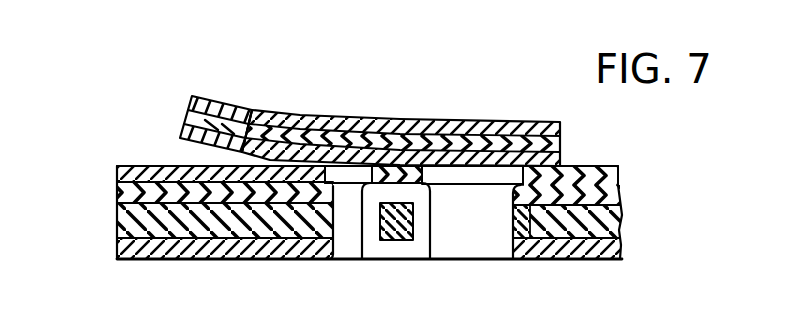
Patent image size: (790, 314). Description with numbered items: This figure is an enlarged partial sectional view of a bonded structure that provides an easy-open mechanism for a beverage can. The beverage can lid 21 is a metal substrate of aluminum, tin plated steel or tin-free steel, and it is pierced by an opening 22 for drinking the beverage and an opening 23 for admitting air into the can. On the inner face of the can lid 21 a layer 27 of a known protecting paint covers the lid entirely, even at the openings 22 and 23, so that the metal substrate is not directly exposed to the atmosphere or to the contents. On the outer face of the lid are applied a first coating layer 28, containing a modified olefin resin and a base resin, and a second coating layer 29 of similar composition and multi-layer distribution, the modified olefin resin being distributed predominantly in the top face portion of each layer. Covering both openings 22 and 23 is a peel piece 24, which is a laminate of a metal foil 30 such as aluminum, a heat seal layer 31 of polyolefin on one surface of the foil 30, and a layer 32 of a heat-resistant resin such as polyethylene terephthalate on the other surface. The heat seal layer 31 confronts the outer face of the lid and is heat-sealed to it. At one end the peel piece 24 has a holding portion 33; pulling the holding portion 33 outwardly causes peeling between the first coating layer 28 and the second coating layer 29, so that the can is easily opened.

The beverage can lid 21 is at (550, 270).
The opening for drinking 22 is at (468, 250).
The opening for admitting air 23 is at (347, 252).
The peel piece 24 is at (404, 114).
The layer of protecting paint 27 is at (513, 240).
The first coating layer 28 is at (115, 195).
The second coating layer 29 is at (115, 168).
The foil 30 is at (224, 120).
The heat seal layer 31 is at (180, 135).
The layer of heat-resistant resin 32 is at (341, 119).
The holding portion 33 is at (174, 100).